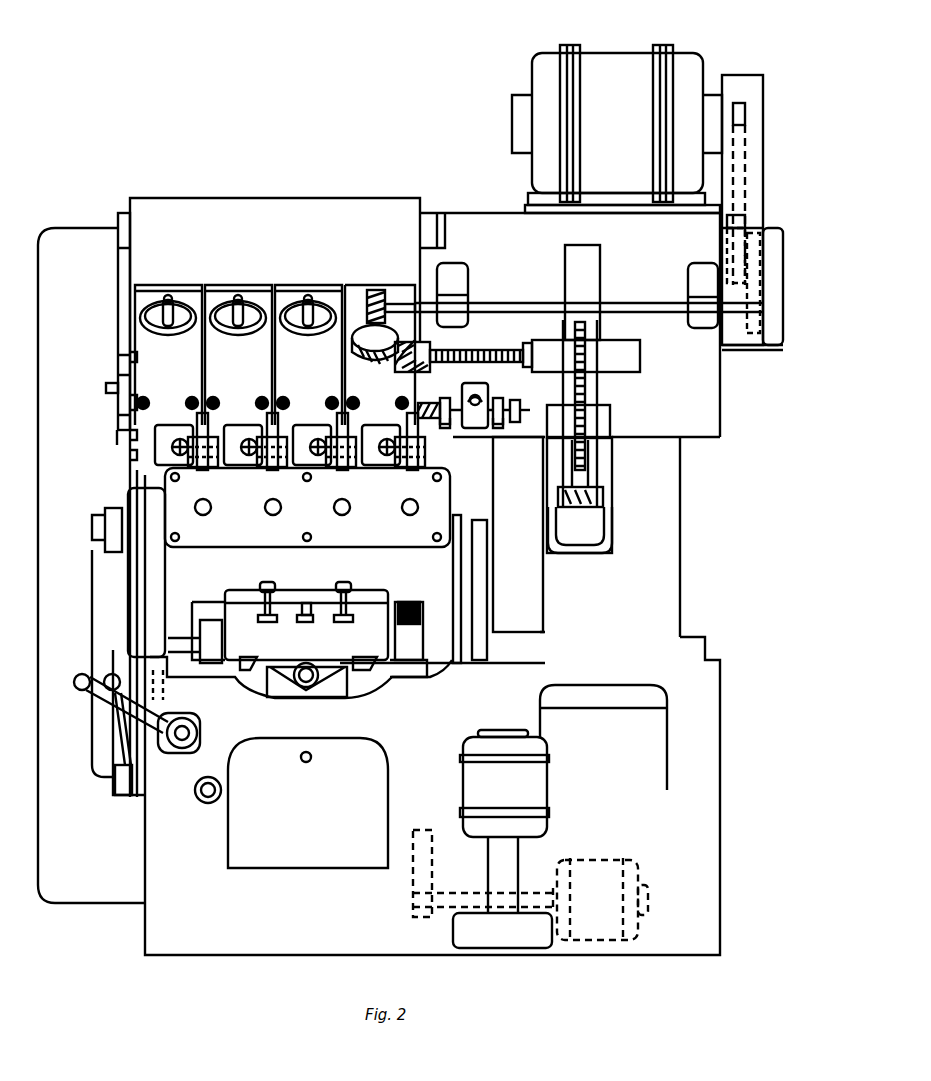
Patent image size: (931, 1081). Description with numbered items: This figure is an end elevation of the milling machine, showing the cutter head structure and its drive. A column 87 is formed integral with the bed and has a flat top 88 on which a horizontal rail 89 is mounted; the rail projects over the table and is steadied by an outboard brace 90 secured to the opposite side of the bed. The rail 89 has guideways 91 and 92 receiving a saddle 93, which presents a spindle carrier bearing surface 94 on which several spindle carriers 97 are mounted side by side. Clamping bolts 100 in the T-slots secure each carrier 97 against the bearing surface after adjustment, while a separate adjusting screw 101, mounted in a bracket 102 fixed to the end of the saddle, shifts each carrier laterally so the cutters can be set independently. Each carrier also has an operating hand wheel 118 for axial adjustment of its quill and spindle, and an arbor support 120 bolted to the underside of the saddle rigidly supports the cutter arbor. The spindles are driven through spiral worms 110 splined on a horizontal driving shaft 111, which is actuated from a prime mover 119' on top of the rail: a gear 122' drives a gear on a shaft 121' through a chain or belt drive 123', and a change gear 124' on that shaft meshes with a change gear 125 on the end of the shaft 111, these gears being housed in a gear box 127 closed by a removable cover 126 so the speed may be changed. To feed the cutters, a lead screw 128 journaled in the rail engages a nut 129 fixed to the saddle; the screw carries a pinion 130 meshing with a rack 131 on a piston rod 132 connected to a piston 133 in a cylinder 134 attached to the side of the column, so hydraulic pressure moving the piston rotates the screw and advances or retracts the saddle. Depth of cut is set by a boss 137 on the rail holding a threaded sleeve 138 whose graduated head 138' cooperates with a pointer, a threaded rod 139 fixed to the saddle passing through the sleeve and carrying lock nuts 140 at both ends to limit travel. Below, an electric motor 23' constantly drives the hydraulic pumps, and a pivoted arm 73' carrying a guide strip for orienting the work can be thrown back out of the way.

The electric motor 23' is at (534, 886).
The pivoted arm 73' is at (307, 507).
The column 87 is at (672, 560).
The flat top 88 is at (698, 438).
The horizontal rail 89 is at (490, 228).
The outboard brace 90 is at (66, 245).
The guideway 91 is at (118, 222).
The guideway 92 is at (118, 368).
The saddle 93 is at (290, 210).
The spindle carrier bearing surface 94 is at (130, 437).
The spindle carrier 97 is at (275, 355).
The clamping bolts 100 is at (188, 403).
The adjusting screw 101 is at (106, 388).
The bracket 102 is at (118, 406).
The spiral worm 110 is at (392, 290).
The horizontal driving shaft 111 is at (480, 307).
The operating hand wheel 118 is at (170, 443).
The prime mover 119' is at (617, 118).
The arbor support 120 is at (733, 243).
The shaft 121' is at (707, 236).
The gear 122' is at (770, 108).
The chain or belt drive 123' is at (765, 210).
The change gear 124' is at (772, 215).
The change gear 125 is at (752, 292).
The removable cover 126 is at (775, 320).
The gear box 127 is at (765, 350).
The lead screw 128 is at (506, 350).
The nut 129 is at (412, 392).
The pinion 130 is at (592, 345).
The rack 131 is at (600, 400).
The piston rod 132 is at (583, 440).
The piston 133 is at (605, 495).
The cylinder 134 is at (605, 530).
The boss 137 is at (482, 395).
The sleeve 138 is at (450, 441).
The head 138' is at (472, 450).
The threaded rod 139 is at (516, 406).
The lock nuts 140 is at (447, 398).